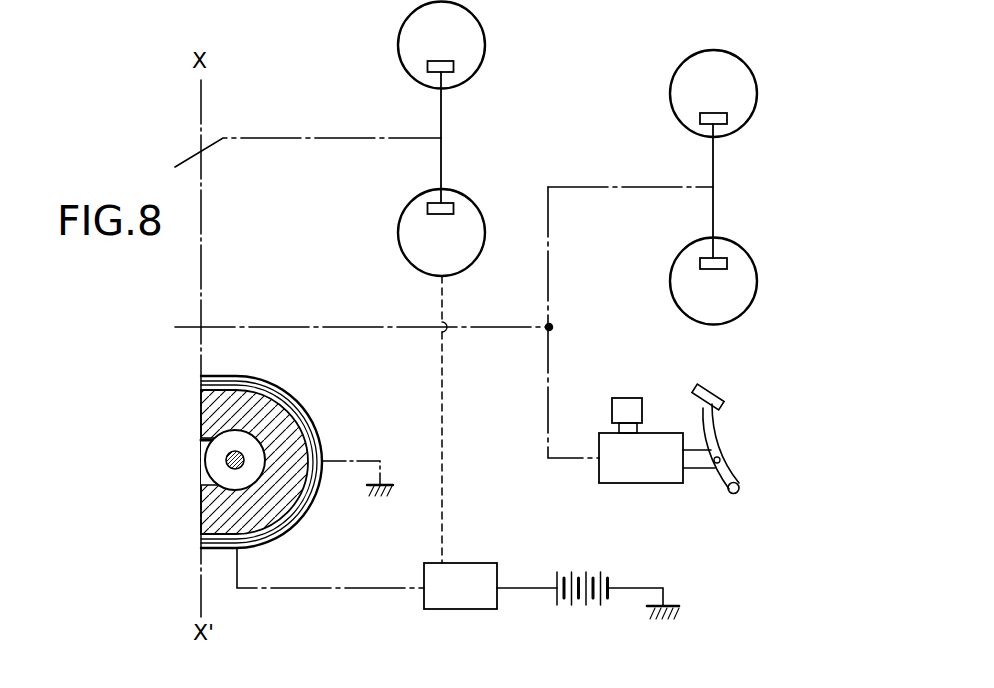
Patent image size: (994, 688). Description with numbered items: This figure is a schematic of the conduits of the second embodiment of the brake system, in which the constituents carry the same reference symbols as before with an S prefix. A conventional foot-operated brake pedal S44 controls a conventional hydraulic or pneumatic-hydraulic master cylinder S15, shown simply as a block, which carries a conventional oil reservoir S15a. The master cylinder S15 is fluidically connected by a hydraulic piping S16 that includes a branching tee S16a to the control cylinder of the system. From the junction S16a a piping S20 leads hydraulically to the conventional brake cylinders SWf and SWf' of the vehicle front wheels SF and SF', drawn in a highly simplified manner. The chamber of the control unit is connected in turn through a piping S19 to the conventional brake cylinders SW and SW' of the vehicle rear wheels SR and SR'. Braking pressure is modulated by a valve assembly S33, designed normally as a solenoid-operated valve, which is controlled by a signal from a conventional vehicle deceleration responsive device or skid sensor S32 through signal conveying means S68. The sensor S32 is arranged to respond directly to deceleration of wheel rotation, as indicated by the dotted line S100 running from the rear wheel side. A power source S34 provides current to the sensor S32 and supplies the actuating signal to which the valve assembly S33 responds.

The piping S19 is at (319, 138).
The vehicle rear wheel SR is at (459, 103).
The brake cylinder SW is at (477, 70).
The vehicle rear wheel SR' is at (461, 232).
The brake cylinder SW' is at (483, 188).
The vehicle front wheel SF is at (723, 143).
The hydraulic brake cylinder SWf is at (750, 118).
The vehicle front wheel SF' is at (734, 281).
The hydraulic brake cylinder SWf' is at (749, 242).
The piping S20 is at (622, 188).
The branching tee S16a is at (553, 325).
The hydraulic piping S16 is at (549, 400).
The master cylinder S15 is at (648, 472).
The oil reservoir S15a is at (628, 398).
The brake pedal S44 is at (718, 444).
The dotted line S100 is at (442, 468).
The valve assembly S33 is at (316, 411).
The signal conveying means S68 is at (343, 586).
The vehicle deceleration responsive device S32 is at (465, 574).
The power source S34 is at (597, 575).